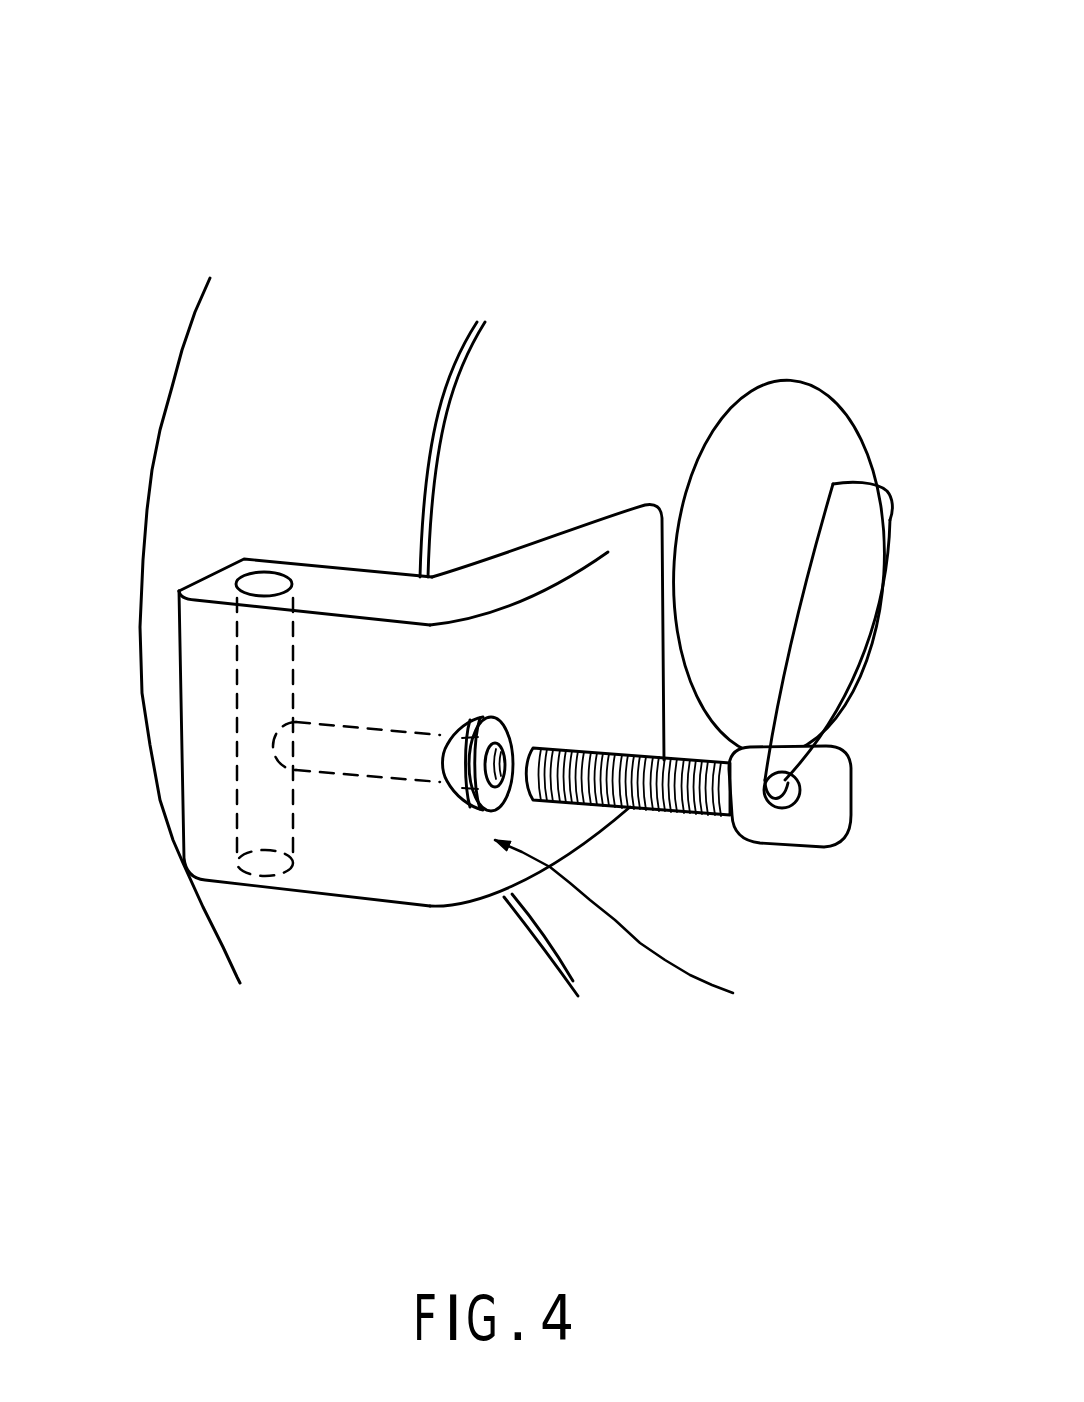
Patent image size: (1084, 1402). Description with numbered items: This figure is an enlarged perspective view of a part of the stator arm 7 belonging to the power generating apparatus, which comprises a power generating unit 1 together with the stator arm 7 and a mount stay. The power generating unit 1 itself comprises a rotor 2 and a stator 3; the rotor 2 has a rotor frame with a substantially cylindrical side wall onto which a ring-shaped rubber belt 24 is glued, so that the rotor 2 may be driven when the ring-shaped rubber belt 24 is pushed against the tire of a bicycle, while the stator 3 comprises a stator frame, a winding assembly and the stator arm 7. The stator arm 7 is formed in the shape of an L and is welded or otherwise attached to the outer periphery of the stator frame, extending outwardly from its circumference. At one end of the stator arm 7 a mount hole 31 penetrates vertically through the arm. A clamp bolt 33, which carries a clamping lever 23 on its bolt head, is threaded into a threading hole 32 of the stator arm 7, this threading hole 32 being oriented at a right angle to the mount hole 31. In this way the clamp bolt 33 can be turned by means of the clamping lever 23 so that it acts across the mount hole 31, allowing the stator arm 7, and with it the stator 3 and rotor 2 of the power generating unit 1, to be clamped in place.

The power generating unit 1 is at (353, 953).
The rotor 2 is at (169, 491).
The stator 3 is at (572, 466).
The stator arm 7 is at (630, 937).
The clamping lever 23 is at (779, 531).
The ring-shaped rubber belt 24 is at (331, 438).
The mount hole 31 is at (264, 589).
The threading hole 32 is at (510, 733).
The clamp bolt 33 is at (704, 766).